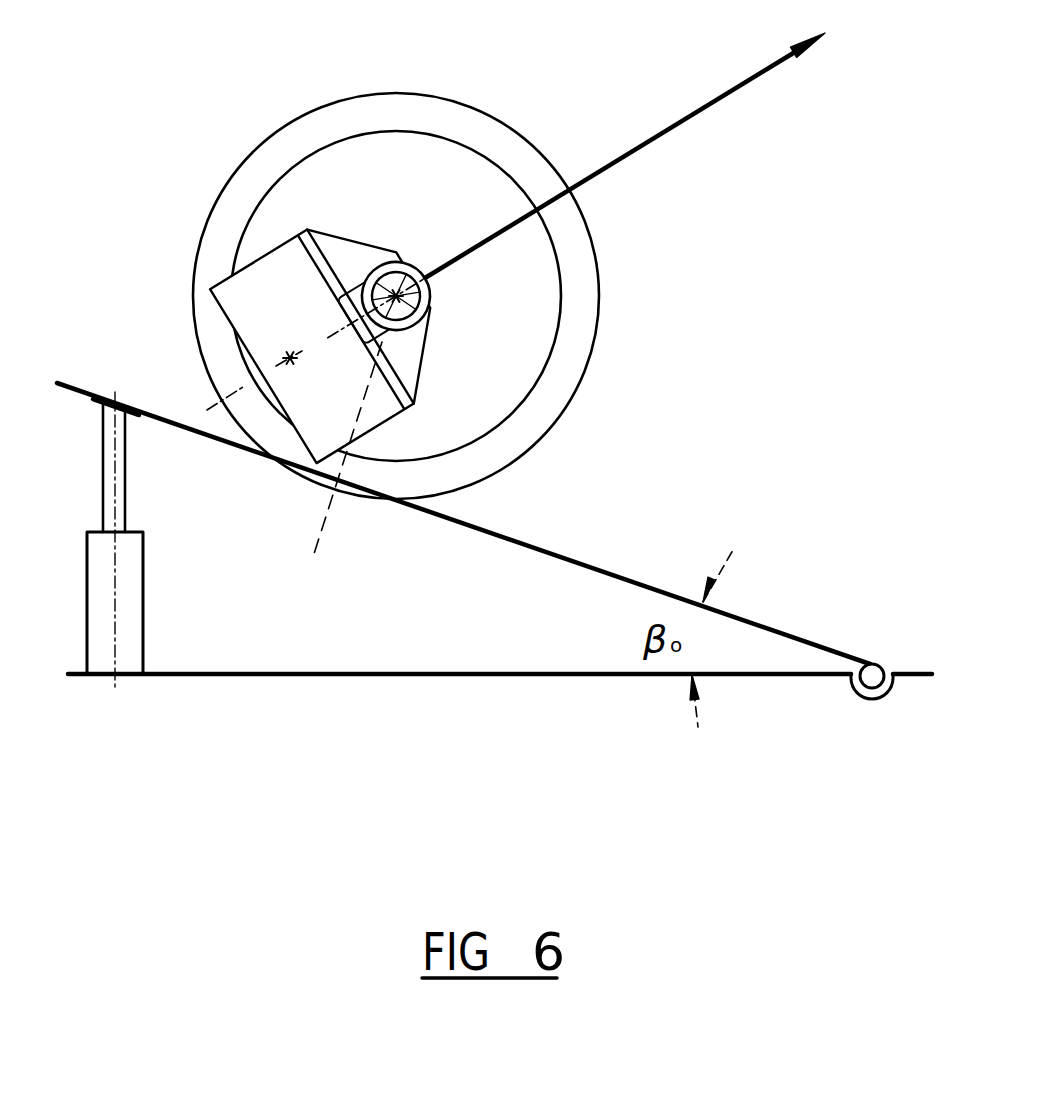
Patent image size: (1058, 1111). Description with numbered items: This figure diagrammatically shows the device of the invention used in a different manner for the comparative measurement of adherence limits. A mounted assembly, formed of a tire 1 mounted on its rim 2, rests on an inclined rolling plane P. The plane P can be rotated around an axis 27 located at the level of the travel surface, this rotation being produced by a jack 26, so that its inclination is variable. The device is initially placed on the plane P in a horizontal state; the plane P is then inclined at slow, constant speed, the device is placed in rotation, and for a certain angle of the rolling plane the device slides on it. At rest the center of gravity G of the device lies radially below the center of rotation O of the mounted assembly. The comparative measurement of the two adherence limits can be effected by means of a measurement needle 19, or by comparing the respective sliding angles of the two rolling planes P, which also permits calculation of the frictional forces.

The tire 1 is at (308, 108).
The rim 2 is at (267, 190).
The measurement needle 19 is at (742, 113).
The jack 26 is at (132, 602).
The axis 27 is at (872, 656).
The inclined rolling plane P is at (100, 390).
The center of gravity G is at (337, 378).
The center of rotation O is at (432, 306).